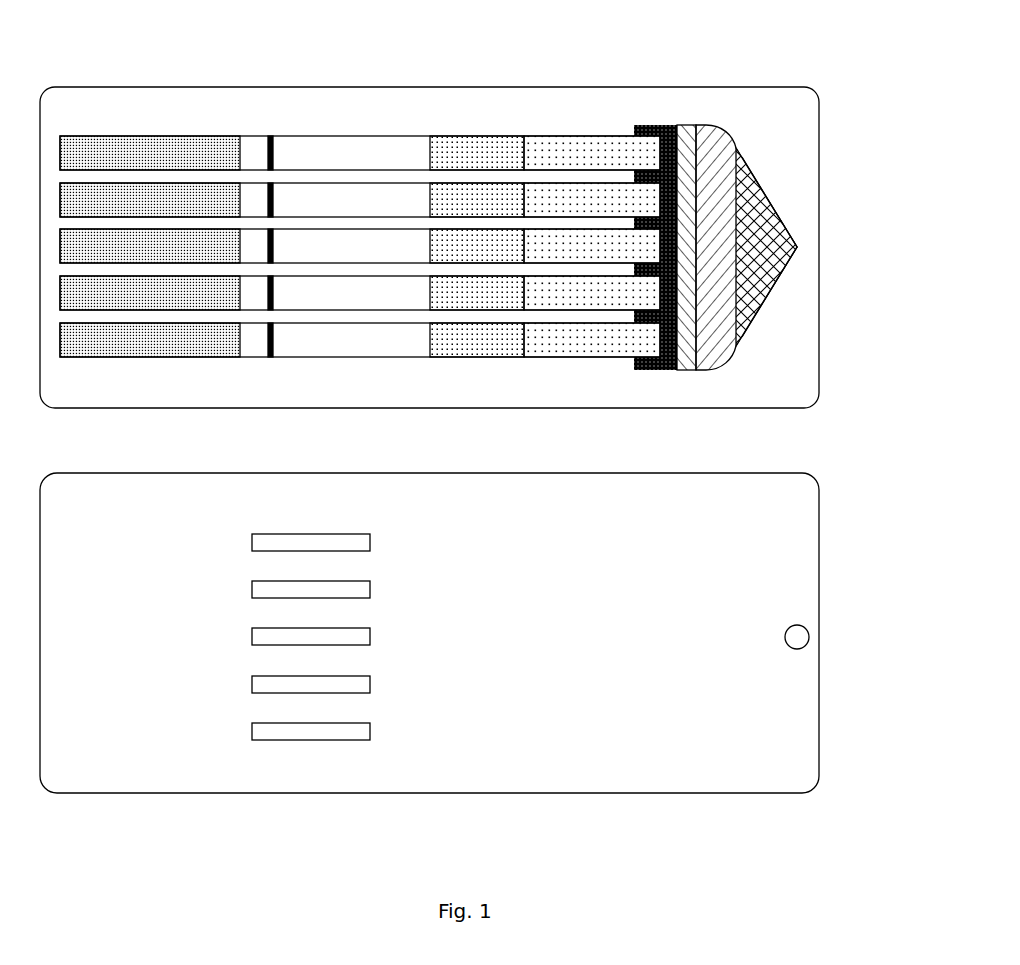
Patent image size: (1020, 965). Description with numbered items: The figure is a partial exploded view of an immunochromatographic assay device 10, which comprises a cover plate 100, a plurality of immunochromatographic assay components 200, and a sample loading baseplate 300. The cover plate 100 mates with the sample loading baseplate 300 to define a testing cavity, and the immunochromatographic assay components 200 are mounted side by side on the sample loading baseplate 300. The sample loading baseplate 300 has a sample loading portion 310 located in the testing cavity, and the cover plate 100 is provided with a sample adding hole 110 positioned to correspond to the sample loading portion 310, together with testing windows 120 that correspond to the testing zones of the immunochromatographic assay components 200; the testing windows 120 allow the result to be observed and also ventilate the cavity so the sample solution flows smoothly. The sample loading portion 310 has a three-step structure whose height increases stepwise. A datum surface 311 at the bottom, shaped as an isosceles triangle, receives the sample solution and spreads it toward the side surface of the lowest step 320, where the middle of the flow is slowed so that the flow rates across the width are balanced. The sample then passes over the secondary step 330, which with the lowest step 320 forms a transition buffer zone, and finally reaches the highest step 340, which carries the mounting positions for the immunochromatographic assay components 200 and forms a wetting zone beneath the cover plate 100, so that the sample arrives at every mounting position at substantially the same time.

The immunochromatographic assay device 10 is at (93, 21).
The cover plate 100 is at (512, 755).
The sample adding hole 110 is at (790, 640).
The testing window 120 is at (303, 727).
The immunochromatographic assay component 200 is at (568, 145).
The sample loading baseplate 300 is at (498, 105).
The sample loading portion 310 is at (758, 212).
The datum surface 311 is at (773, 212).
The lowest step 320 is at (797, 247).
The secondary step 330 is at (692, 343).
The highest step 340 is at (695, 292).